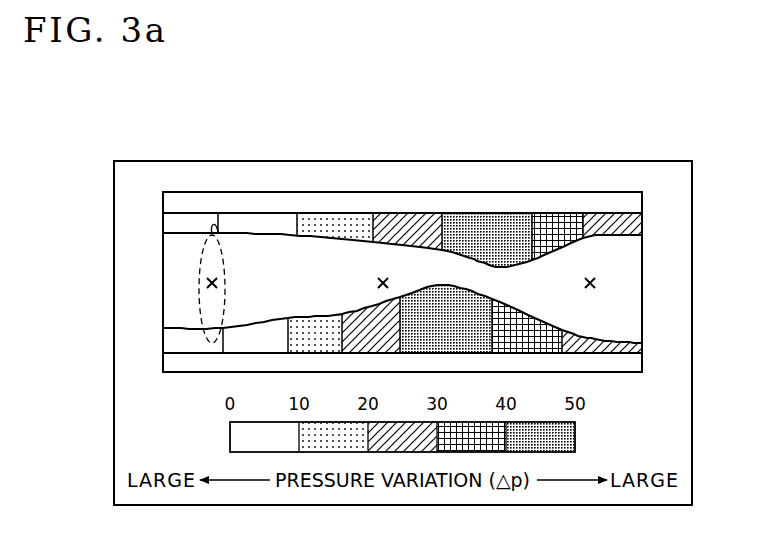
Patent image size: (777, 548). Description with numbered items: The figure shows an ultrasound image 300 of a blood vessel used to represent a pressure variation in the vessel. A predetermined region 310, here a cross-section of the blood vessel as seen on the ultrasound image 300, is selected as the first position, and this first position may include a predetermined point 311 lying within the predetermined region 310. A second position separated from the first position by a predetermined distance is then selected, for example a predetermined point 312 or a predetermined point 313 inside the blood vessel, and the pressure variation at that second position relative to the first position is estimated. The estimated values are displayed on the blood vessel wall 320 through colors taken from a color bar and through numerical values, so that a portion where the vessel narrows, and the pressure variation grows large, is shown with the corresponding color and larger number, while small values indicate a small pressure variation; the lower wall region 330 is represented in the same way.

The ultrasound image 300 is at (606, 181).
The predetermined region 310 is at (214, 226).
The predetermined point 311 is at (206, 283).
The predetermined point 312 is at (377, 283).
The predetermined point 313 is at (596, 283).
The blood vessel wall 320 is at (634, 226).
The lower channel wall region 330 is at (402, 320).